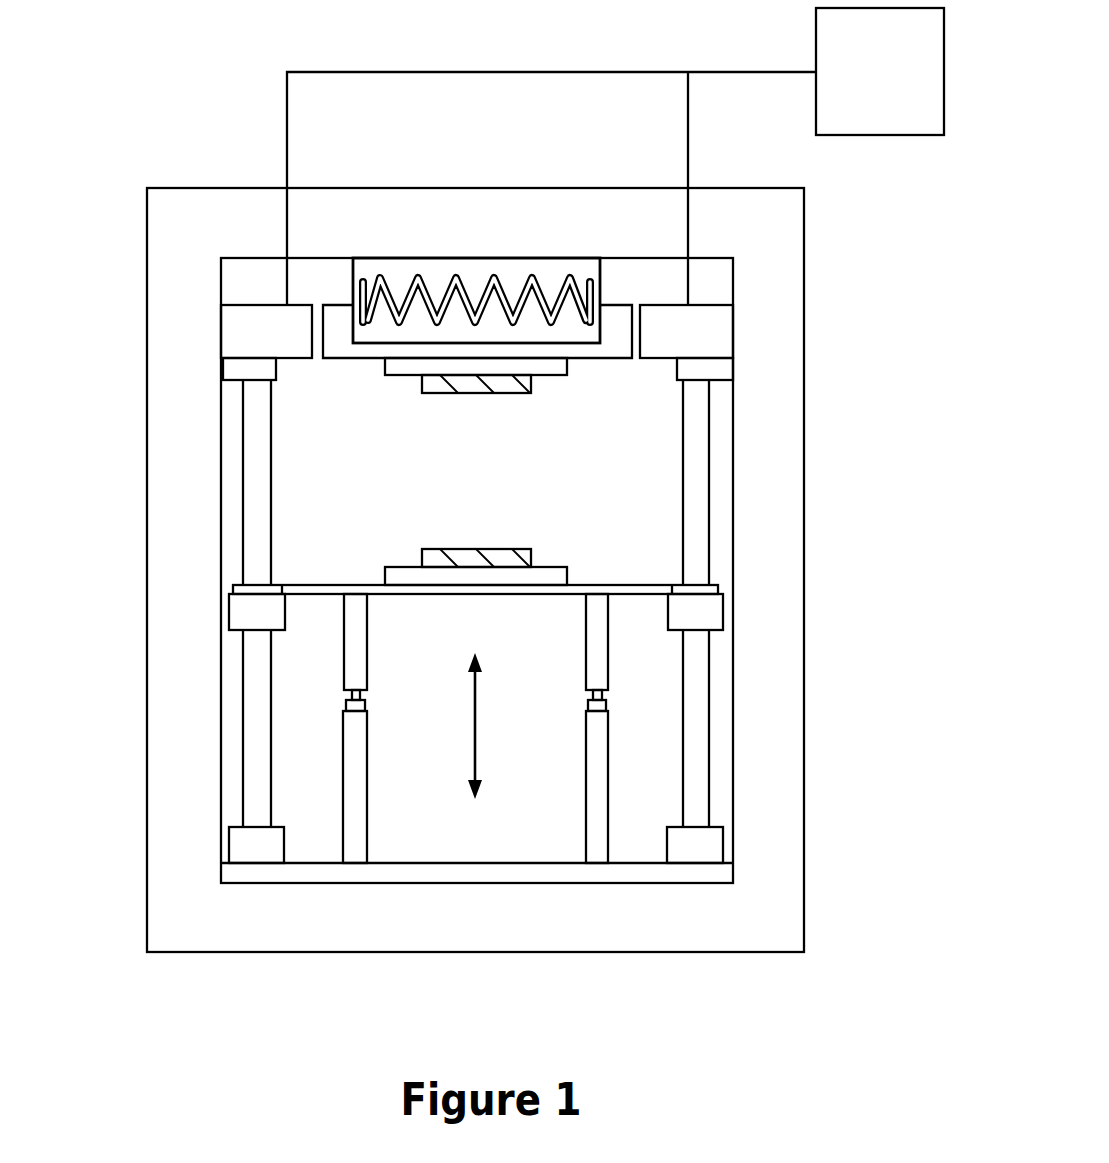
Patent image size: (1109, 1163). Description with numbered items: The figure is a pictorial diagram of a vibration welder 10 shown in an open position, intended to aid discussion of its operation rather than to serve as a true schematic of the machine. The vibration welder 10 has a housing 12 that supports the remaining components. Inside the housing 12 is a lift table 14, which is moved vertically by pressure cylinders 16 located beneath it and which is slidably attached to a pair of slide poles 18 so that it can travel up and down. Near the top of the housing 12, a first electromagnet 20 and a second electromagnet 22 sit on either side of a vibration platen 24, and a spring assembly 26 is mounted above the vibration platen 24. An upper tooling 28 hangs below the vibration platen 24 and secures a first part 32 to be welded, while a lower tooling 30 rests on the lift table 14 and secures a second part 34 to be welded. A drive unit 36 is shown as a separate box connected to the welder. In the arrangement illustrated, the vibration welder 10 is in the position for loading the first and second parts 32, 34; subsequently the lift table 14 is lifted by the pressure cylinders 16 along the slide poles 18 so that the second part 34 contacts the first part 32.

The vibration welder 10 is at (499, 480).
The housing 12 is at (202, 187).
The lift table 14 is at (642, 585).
The pressure cylinders 16 is at (592, 782).
The slide poles 18 is at (257, 779).
The electromagnet 20 is at (221, 322).
The electromagnet 22 is at (733, 323).
The vibration platen 24 is at (622, 312).
The spring assembly 26 is at (385, 285).
The upper tooling 28 is at (402, 368).
The lower tooling 30 is at (403, 575).
The first part 32 is at (510, 387).
The second part 34 is at (520, 557).
The drive unit 36 is at (863, 118).